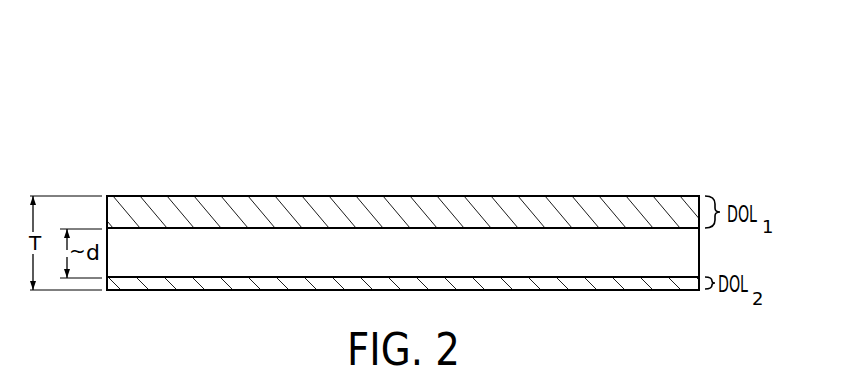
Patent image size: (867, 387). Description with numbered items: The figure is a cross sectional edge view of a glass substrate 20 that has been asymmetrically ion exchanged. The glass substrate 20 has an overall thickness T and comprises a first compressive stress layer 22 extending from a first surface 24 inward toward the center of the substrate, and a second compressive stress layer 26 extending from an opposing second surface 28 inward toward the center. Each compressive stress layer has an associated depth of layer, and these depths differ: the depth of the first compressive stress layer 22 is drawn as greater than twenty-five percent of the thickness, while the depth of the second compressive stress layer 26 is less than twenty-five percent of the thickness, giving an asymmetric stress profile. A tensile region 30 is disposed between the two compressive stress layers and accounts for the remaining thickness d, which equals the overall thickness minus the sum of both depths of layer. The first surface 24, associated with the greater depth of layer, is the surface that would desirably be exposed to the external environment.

The glass substrate 20 is at (512, 177).
The first compressive stress layer 22 is at (210, 199).
The first surface 24 is at (346, 195).
The second compressive stress layer 26 is at (637, 282).
The second surface 28 is at (492, 292).
The tensile region 30 is at (167, 267).